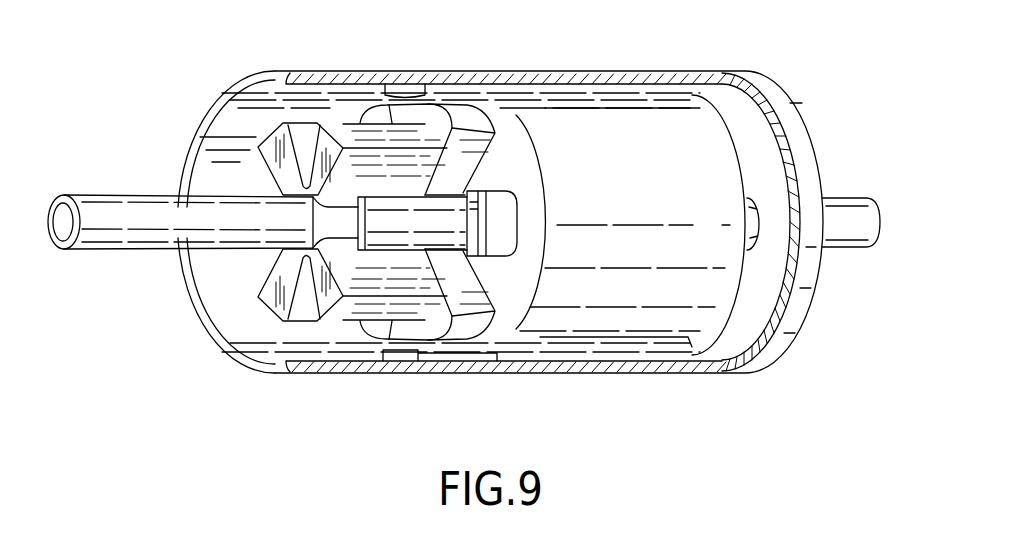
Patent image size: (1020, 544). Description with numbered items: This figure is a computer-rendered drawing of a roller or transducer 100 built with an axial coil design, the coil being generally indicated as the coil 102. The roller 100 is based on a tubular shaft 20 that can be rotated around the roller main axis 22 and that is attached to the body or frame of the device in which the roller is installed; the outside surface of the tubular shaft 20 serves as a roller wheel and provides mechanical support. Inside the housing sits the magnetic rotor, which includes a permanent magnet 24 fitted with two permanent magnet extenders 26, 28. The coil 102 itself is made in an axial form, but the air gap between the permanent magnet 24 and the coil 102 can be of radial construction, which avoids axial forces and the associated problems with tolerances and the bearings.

The tubular shaft 20 is at (814, 289).
The roller main axis 22 is at (107, 237).
The permanent magnet 24 is at (603, 203).
The permanent magnet extender 26 is at (438, 360).
The permanent magnet extender 28 is at (443, 92).
The roller 100 is at (168, 121).
The axial coil 102 is at (303, 335).